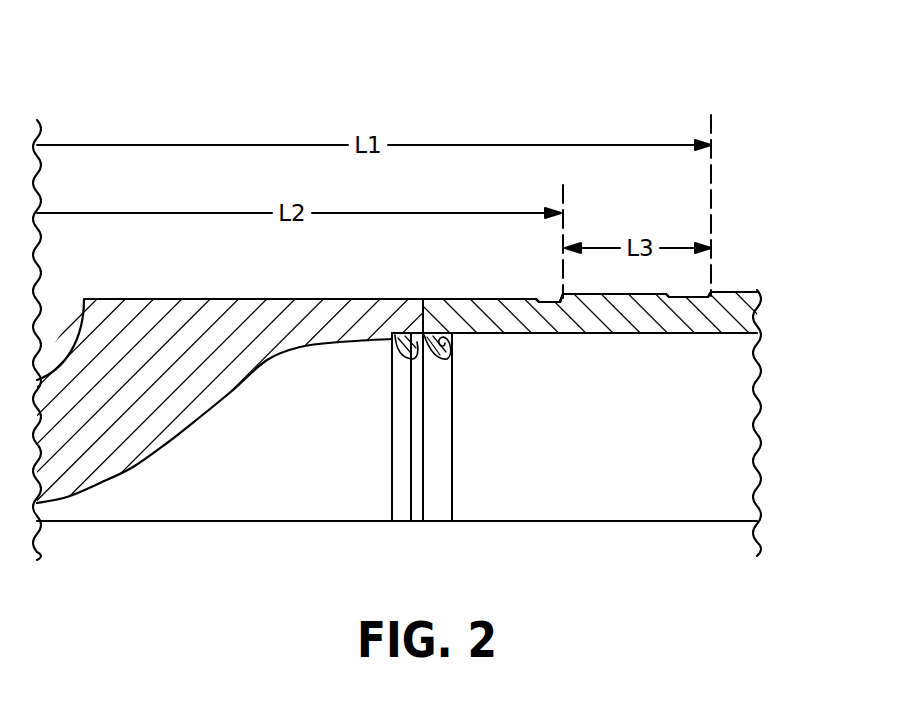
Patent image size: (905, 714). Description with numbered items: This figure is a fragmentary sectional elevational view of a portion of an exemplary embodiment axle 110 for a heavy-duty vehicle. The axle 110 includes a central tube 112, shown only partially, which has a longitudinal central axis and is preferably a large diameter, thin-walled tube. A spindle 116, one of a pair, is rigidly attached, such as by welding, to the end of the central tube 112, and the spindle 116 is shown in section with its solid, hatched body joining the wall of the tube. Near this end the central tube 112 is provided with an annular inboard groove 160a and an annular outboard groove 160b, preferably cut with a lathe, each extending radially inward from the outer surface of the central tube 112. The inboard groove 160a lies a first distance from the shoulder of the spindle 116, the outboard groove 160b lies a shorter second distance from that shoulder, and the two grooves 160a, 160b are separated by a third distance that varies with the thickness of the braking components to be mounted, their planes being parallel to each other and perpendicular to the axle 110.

The axle 110 is at (314, 100).
The central tube 112 is at (738, 278).
The spindle 116 is at (182, 298).
The annular inboard groove 160a is at (697, 301).
The annular outboard groove 160b is at (552, 303).